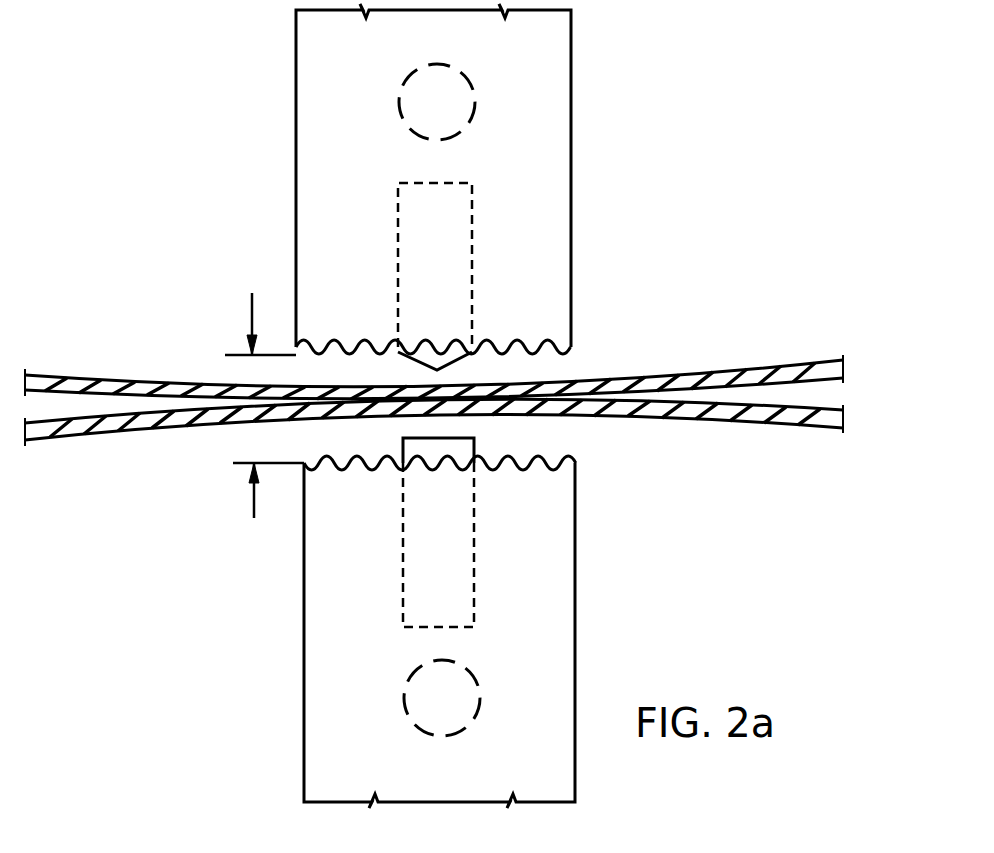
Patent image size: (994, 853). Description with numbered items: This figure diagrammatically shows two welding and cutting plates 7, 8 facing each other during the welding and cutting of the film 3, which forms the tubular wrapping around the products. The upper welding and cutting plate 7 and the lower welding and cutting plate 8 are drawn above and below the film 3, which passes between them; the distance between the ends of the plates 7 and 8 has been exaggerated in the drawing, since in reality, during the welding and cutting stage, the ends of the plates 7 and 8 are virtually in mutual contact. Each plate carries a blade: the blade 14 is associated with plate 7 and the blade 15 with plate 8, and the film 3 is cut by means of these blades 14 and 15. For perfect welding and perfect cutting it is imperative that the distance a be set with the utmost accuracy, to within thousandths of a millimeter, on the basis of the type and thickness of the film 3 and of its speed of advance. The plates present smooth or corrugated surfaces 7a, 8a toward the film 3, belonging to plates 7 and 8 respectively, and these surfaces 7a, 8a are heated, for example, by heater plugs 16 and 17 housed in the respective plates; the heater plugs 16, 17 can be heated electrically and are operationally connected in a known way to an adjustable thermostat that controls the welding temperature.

The film 3 is at (128, 382).
The welding and cutting plate 7 is at (553, 225).
The smooth or corrugated surface 7a is at (510, 340).
The welding and cutting plate 8 is at (555, 517).
The smooth or corrugated surface 8a is at (527, 465).
The blade 14 is at (437, 365).
The blade 15 is at (440, 445).
The heater plug 16 is at (420, 88).
The heater plug 17 is at (430, 700).
The distance a is at (250, 443).